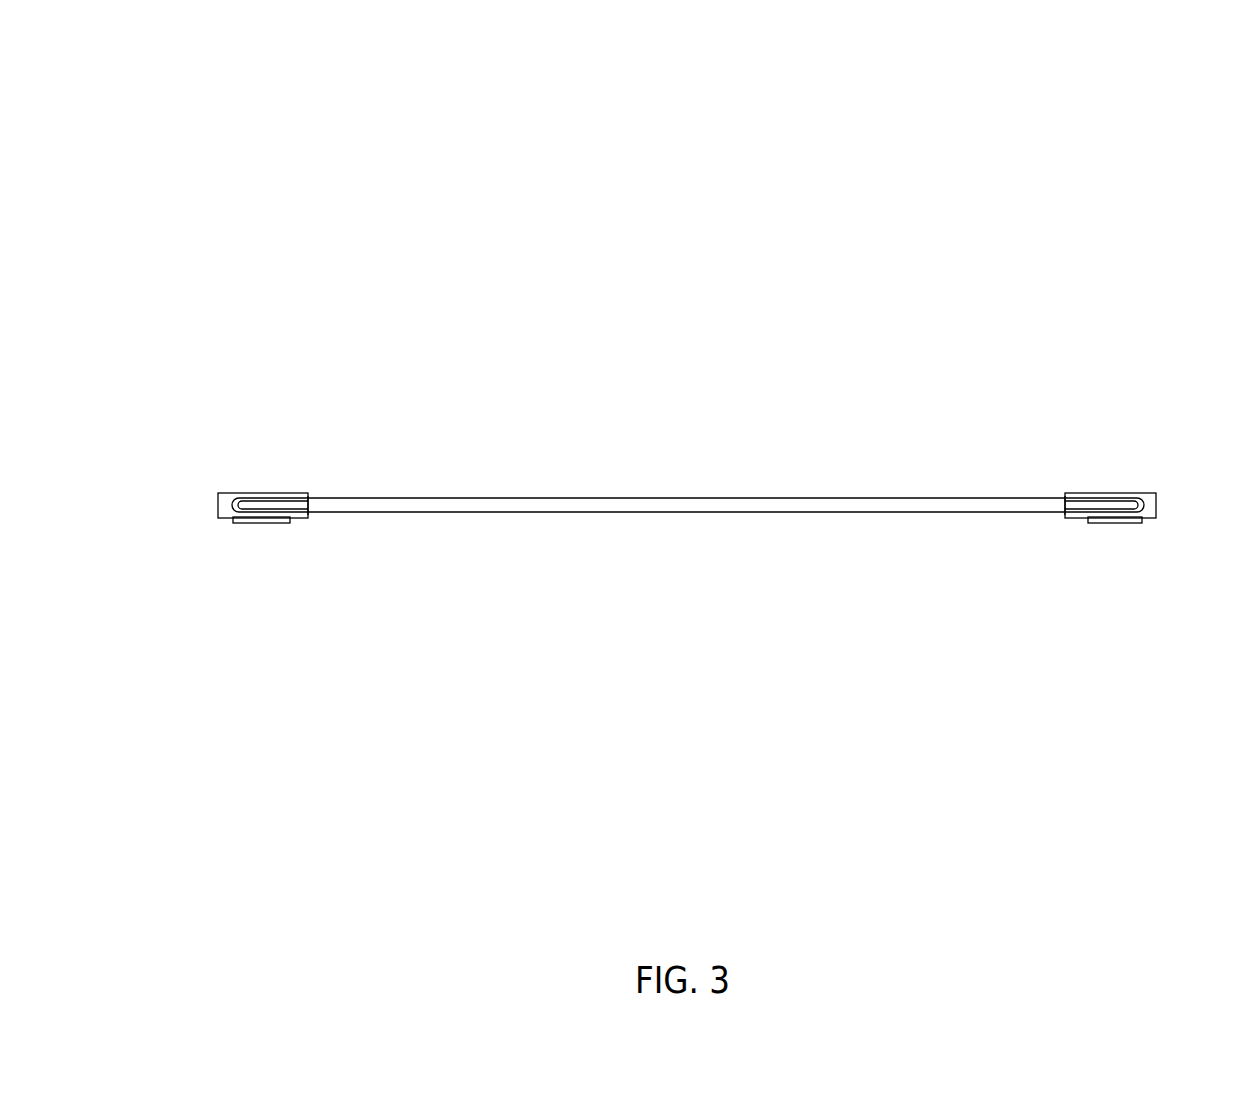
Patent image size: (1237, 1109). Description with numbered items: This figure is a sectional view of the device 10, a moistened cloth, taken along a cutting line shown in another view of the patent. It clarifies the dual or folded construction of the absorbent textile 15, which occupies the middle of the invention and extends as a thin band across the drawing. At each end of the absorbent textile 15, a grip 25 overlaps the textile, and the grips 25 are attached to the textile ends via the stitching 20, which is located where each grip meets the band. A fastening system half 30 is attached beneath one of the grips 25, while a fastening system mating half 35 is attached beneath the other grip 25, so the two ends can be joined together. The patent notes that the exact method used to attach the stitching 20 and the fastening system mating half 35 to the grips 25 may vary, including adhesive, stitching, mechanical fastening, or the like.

The device 10 is at (227, 232).
The absorbent textile 15 is at (585, 496).
The stitching 20 is at (293, 505).
The grips 25 is at (230, 492).
The fastening system half 30 is at (262, 523).
The fastening system mating half 35 is at (1118, 523).